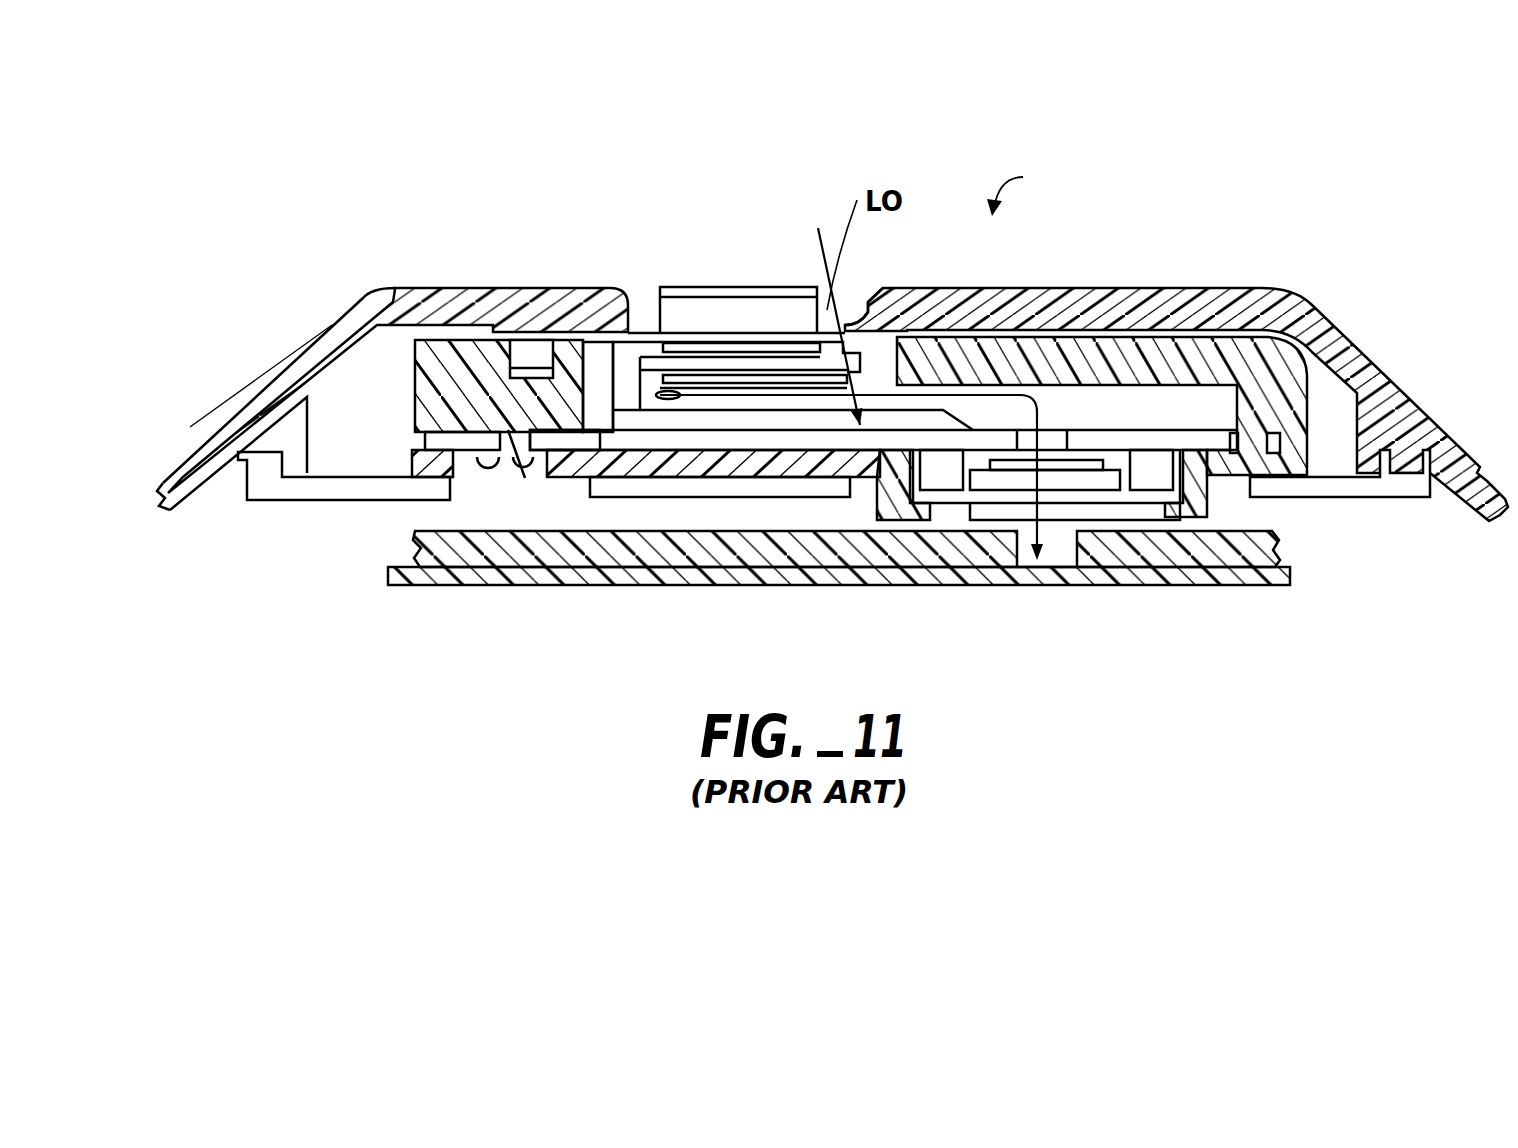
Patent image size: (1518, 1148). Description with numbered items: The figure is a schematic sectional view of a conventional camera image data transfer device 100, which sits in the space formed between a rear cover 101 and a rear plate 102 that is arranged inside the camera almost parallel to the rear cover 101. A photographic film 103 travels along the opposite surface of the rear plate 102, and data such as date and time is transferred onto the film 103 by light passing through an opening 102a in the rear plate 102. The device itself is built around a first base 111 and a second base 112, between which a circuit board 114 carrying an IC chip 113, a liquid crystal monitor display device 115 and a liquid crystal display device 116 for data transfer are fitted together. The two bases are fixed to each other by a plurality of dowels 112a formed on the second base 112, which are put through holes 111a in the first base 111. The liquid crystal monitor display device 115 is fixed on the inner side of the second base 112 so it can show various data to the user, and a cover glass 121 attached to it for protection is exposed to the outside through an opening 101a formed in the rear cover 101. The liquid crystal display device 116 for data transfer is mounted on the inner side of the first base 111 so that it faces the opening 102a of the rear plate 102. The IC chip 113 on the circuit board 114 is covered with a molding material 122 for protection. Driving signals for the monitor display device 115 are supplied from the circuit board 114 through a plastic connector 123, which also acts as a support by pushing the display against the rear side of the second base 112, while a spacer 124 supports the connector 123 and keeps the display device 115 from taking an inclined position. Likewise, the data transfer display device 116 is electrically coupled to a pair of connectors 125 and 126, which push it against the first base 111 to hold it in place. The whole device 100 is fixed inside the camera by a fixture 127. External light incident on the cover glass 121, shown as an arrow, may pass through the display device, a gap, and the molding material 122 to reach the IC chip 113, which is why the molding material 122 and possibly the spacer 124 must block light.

The image data transfer device 100 is at (1039, 186).
The rear cover 101 is at (333, 351).
The opening 101a is at (870, 298).
The rear plate 102 is at (457, 583).
The opening 102a is at (1050, 580).
The photographic film 103 is at (1157, 577).
The first base 111 is at (680, 460).
The holes 111a is at (495, 480).
The second base 112 is at (1040, 330).
The dowels 112a is at (540, 468).
The IC chip 113 is at (800, 437).
The circuit board 114 is at (587, 440).
The liquid crystal monitor display device 115 is at (722, 352).
The liquid crystal display device for data transfer 116 is at (947, 503).
The cover glass 121 is at (803, 330).
The molding material 122 is at (910, 420).
The plastic connector 123 is at (597, 393).
The spacer 124 is at (673, 395).
The connector 125 is at (943, 470).
The connector 126 is at (1153, 473).
The fixture 127 is at (300, 490).